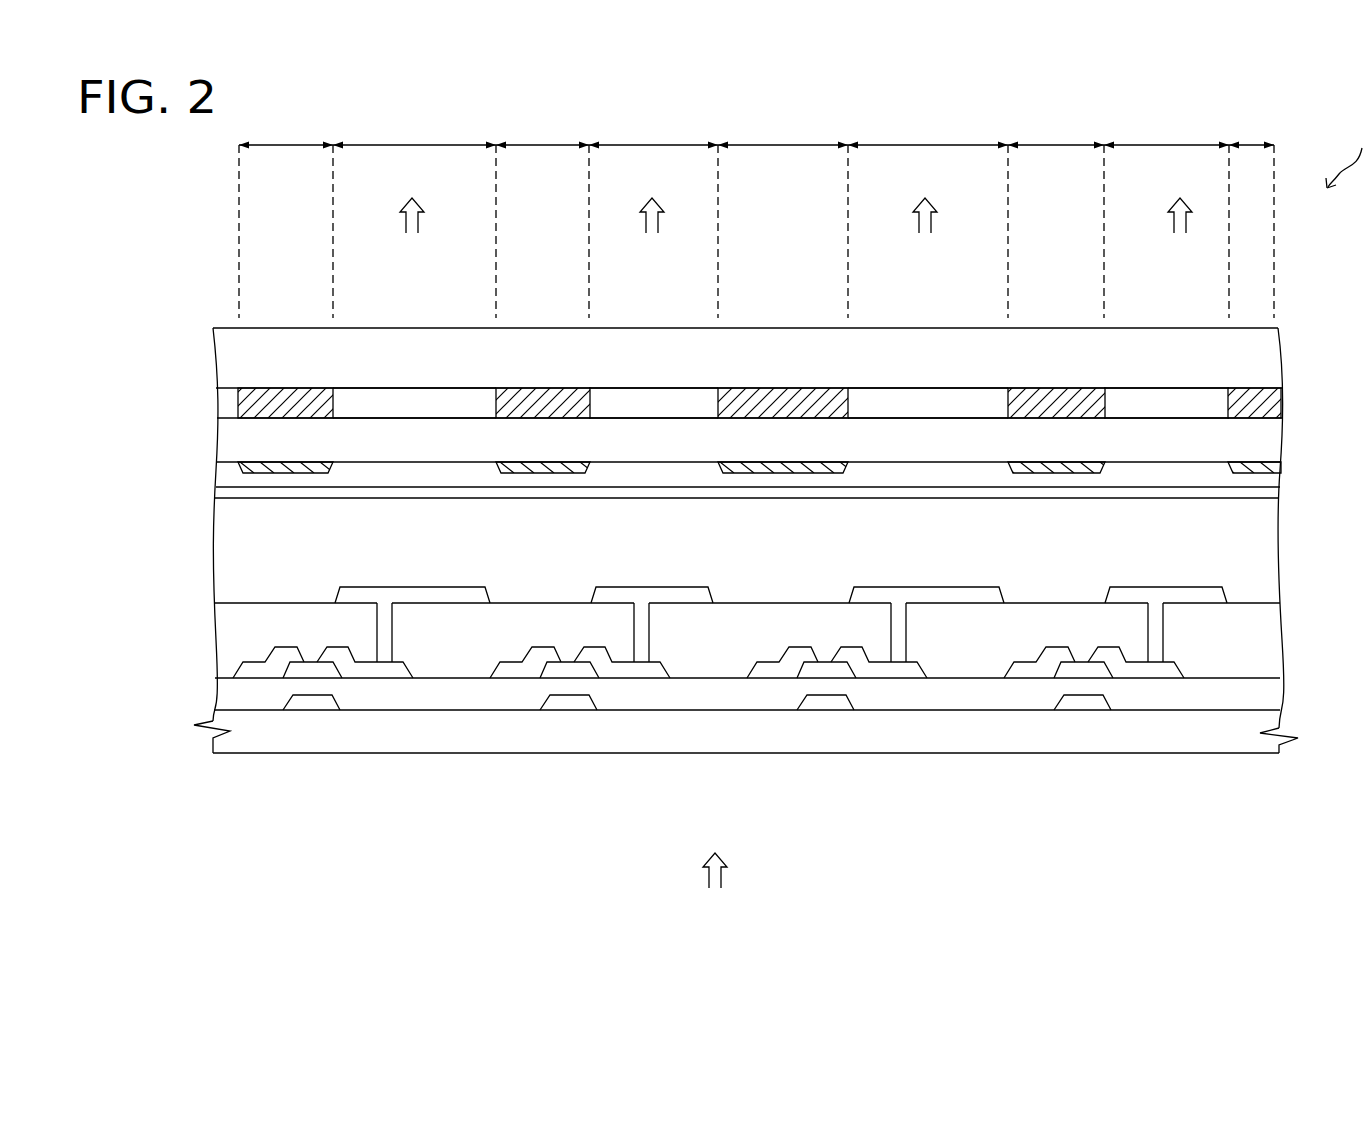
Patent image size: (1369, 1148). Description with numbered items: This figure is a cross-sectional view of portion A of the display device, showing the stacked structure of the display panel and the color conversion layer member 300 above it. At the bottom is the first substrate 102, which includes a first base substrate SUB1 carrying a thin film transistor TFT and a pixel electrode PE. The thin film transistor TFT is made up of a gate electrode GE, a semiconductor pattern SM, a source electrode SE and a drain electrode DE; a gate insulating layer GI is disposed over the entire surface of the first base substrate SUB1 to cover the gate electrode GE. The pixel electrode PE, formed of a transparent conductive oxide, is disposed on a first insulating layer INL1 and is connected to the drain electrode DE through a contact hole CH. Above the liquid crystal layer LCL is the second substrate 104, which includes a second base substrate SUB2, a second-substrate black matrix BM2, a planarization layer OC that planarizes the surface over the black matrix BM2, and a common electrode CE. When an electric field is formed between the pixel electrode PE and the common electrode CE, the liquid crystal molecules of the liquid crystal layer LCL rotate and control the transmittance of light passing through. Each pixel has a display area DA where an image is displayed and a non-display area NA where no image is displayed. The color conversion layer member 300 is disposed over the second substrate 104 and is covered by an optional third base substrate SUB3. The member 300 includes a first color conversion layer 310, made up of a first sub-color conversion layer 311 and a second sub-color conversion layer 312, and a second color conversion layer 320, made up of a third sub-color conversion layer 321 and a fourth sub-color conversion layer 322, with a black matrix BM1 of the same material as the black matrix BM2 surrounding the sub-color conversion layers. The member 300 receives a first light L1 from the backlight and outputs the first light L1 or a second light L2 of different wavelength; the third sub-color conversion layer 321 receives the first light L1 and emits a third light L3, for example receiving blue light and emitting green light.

The color conversion layer member 300 is at (122, 388).
The second substrate 104 is at (122, 423).
The first substrate 102 is at (122, 635).
The first color conversion layer 310 is at (712, 279).
The first sub-color conversion layer 311 is at (415, 400).
The second sub-color conversion layer 312 is at (655, 400).
The second color conversion layer 320 is at (905, 279).
The third sub-color conversion layer 321 is at (898, 400).
The fourth sub-color conversion layer 322 is at (1160, 400).
The third base substrate SUB3 is at (222, 350).
The black matrix BM1 is at (240, 404).
The second base substrate SUB2 is at (222, 437).
The second-substrate black matrix BM2 is at (240, 466).
The common electrode CE is at (225, 492).
The planarization layer OC is at (366, 477).
The liquid crystal layer LCL is at (223, 562).
The first insulating layer INL1 is at (230, 640).
The gate insulating layer GI is at (225, 692).
The first base substrate SUB1 is at (222, 742).
The source electrode SE is at (513, 668).
The gate electrode GE is at (558, 700).
The semiconductor pattern SM is at (568, 665).
The drain electrode DE is at (627, 667).
The contact hole CH is at (650, 635).
The pixel electrode PE is at (697, 597).
The thin film transistor TFT is at (485, 816).
The non-display area NA is at (756, 134).
The display area DA is at (781, 134).
The first light L1 is at (916, 543).
The second light L2 is at (412, 200).
The third light L3 is at (925, 200).
The portion A is at (1346, 154).